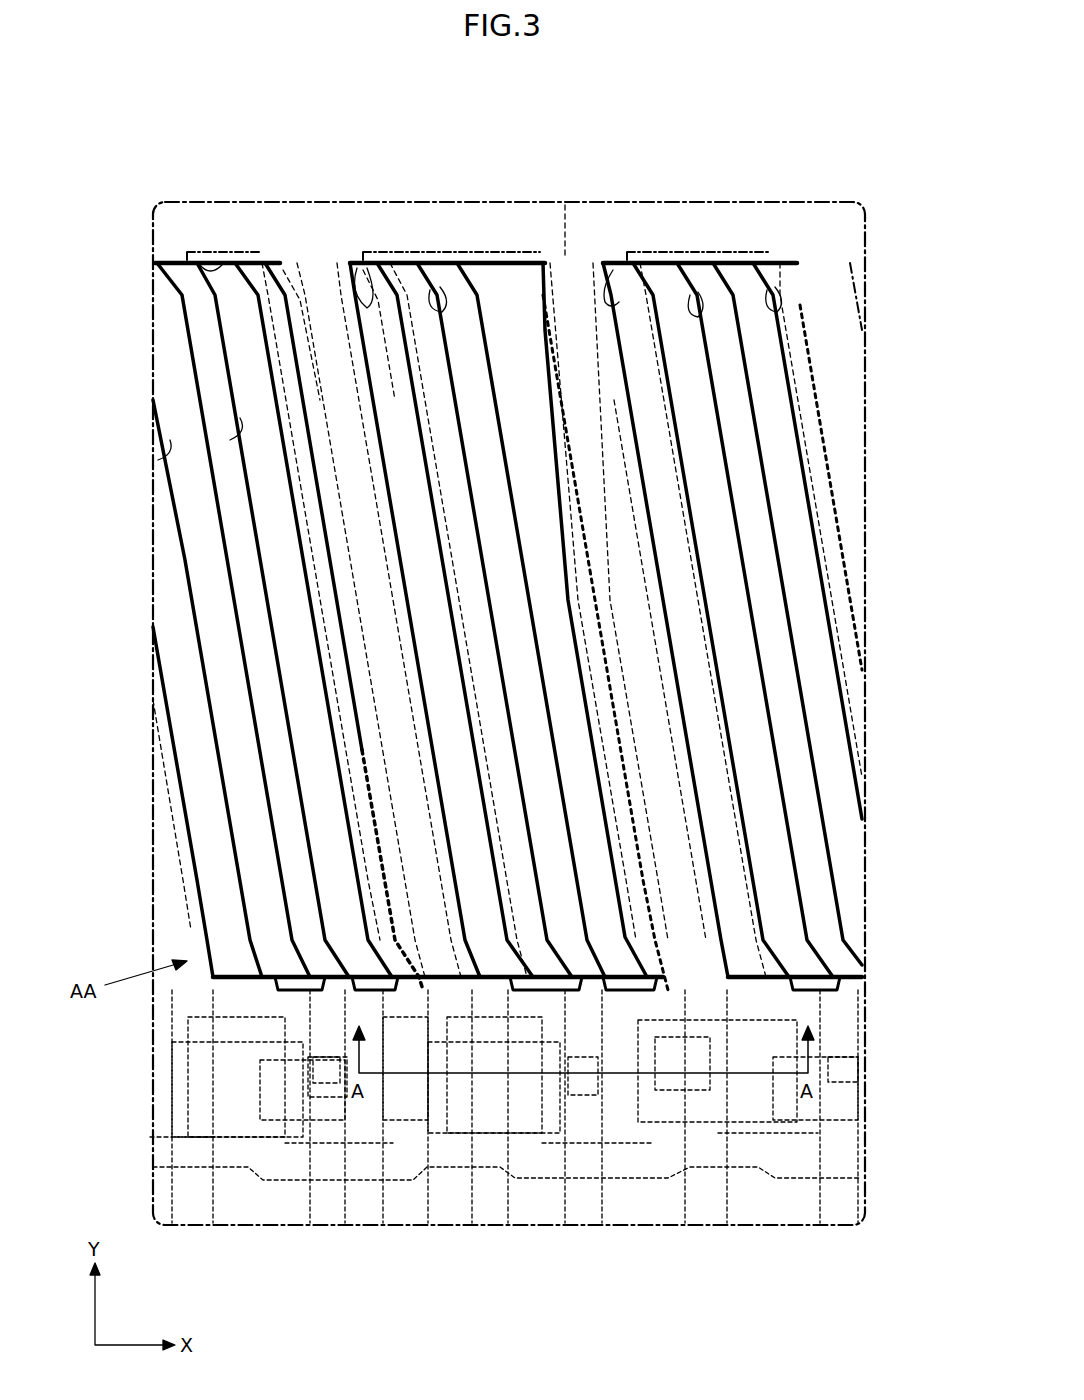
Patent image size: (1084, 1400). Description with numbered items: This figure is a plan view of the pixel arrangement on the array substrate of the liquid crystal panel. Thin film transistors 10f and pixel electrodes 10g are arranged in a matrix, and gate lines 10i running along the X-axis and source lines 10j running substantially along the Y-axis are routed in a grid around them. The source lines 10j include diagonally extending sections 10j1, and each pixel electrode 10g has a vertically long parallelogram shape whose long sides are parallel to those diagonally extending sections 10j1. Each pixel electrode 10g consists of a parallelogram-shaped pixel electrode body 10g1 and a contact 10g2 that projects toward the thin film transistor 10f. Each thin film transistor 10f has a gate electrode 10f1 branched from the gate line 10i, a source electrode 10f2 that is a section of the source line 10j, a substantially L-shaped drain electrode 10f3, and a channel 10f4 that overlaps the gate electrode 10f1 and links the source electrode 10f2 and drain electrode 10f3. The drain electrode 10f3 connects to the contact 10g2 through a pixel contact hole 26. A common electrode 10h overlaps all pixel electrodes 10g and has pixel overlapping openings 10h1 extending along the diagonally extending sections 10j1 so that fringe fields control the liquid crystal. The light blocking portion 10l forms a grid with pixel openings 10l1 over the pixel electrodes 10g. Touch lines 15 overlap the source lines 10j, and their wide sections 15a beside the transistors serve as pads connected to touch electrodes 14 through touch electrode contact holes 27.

The touch electrode 14 is at (520, 670).
The common electrode 10h is at (780, 233).
The pixel electrode 10g is at (547, 725).
The pixel electrode body 10g1 is at (685, 250).
The contact 10g2 is at (590, 1100).
The light blocking portion 10l is at (566, 205).
The pixel opening 10l1 is at (620, 250).
The touch line 15 is at (241, 250).
The wide section 15a is at (407, 1090).
The pixel overlapping opening 10h1 is at (245, 425).
The diagonally extending section 10j1 is at (365, 648).
The source line 10j is at (680, 1045).
The thin film transistor 10f is at (240, 1143).
The gate electrode 10f1 is at (440, 1000).
The source electrode 10f2 is at (483, 1097).
The drain electrode 10f3 is at (518, 1120).
The channel 10f4 is at (478, 1160).
The gate line 10i is at (285, 1145).
The pixel contact hole 26 is at (605, 1120).
The touch electrode contact hole 27 is at (685, 1087).